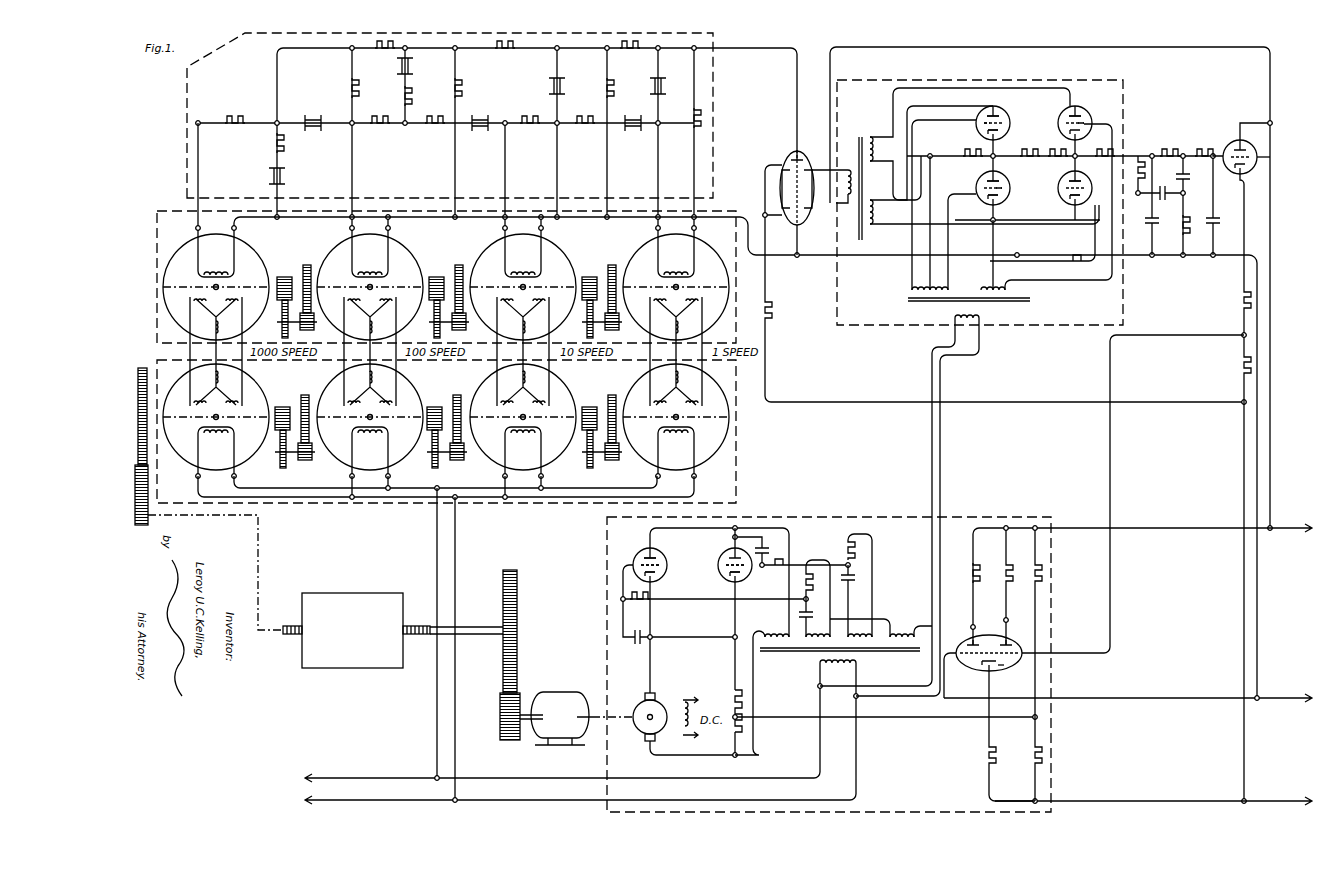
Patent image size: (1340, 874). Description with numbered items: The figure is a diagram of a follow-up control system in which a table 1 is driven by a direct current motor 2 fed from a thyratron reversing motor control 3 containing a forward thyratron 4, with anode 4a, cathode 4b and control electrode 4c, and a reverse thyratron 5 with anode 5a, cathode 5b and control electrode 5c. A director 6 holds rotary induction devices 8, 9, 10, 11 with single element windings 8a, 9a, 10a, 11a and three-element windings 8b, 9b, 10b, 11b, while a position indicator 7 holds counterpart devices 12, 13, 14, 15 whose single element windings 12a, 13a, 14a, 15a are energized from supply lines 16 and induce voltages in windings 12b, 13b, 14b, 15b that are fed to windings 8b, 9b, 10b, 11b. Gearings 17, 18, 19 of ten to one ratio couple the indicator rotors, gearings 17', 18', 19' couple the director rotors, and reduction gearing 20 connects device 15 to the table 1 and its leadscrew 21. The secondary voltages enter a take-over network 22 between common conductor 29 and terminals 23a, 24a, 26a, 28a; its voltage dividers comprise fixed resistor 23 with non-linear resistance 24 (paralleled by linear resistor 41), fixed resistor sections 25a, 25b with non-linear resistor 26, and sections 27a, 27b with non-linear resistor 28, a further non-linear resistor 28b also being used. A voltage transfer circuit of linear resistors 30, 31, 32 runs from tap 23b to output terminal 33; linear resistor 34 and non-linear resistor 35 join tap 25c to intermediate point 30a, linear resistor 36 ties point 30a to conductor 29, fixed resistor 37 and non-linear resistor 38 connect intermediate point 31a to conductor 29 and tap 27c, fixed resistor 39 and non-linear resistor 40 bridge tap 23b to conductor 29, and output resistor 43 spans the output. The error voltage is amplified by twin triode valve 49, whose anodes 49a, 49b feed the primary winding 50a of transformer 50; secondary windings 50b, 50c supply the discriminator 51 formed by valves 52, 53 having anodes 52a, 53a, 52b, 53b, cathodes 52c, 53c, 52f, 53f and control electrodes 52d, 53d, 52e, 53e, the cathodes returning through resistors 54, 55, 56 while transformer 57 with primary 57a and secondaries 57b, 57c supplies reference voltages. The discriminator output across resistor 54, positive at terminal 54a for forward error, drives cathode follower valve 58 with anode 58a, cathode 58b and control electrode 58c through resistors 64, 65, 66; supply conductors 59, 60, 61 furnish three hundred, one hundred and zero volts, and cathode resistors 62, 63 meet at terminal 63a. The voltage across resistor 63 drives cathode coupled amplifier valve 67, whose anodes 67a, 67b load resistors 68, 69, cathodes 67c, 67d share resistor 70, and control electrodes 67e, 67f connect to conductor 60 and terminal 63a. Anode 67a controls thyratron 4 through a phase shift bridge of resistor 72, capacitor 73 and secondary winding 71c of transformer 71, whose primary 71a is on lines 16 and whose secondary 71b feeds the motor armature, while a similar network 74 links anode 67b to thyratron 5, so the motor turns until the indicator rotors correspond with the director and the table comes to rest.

The table 1 is at (360, 593).
The direct current shunt-type motor 2 is at (568, 697).
The thyratron reversing motor control 3 is at (845, 517).
The thyratron 4 is at (722, 560).
The anode of thyratron 4 4a is at (740, 577).
The cathode of thyratron 4 4b is at (734, 545).
The grid of tube 4 4c is at (720, 572).
The thyratron 5 is at (636, 560).
The anode of thyratron 5 5a is at (656, 557).
The cathode of thyratron 5 5b is at (657, 578).
The grid of tube 5 5c is at (668, 566).
The director 6 is at (160, 211).
The position indicator 7 is at (160, 360).
The rotary induction device 8 is at (704, 252).
The single element winding 8a is at (675, 262).
The distributed 3-element winding 8b is at (677, 316).
The rotary induction device 9 is at (552, 252).
The single element winding 9a is at (522, 262).
The distributed 3-element winding 9b is at (524, 316).
The rotary induction device 10 is at (398, 252).
The single element winding 10a is at (369, 262).
The distributed 3-element winding 10b is at (374, 316).
The rotary induction device 11 is at (248, 252).
The single element winding 11a is at (215, 262).
The distributed 3-element winding 11b is at (220, 316).
The rotary induction device 12 is at (640, 385).
The single element winding 12a is at (675, 445).
The distributed 3-element winding 12b is at (680, 388).
The rotary induction device 13 is at (486, 385).
The single element winding 13a is at (522, 445).
The distributed 3-element winding 13b is at (527, 388).
The rotary induction device 14 is at (333, 385).
The single element winding 14a is at (369, 445).
The distributed 3-element winding 14b is at (374, 388).
The rotary induction device 15 is at (183, 385).
The single element winding 15a is at (215, 445).
The distributed 3-element winding 15b is at (220, 388).
The supply lines 16 is at (368, 781).
The gearing 17 is at (602, 424).
The gearing 17' is at (602, 292).
The gearing 18 is at (447, 424).
The gearing 18' is at (449, 292).
The gearing 19 is at (295, 424).
The gearing 19' is at (297, 295).
The reduction gearing 20 is at (148, 480).
The leadscrew 21 is at (483, 627).
The mixing network 22 is at (187, 90).
The fixed resistor 23 is at (235, 130).
The terminal 23a is at (196, 125).
The tap 23b is at (275, 121).
The non-linear resistance 24 is at (312, 116).
The terminal 24a is at (350, 126).
The fixed resistor section 25a is at (380, 112).
The fixed resistor section 25b is at (435, 134).
The tap 25c is at (405, 126).
The non-linear resistor 26 is at (480, 132).
The terminal 26a is at (504, 121).
The fixed resistor section 27a is at (530, 112).
The fixed resistor section 27b is at (583, 134).
The tap 27c is at (555, 126).
The non-linear resistor 28 is at (637, 132).
The terminal 28a is at (660, 126).
The non-linear resistor 28b is at (666, 80).
The common conductor 29 is at (478, 219).
The linear resistor 30 is at (382, 54).
The intermediate point 30a is at (406, 48).
The linear resistor 31 is at (503, 54).
The intermediate point 31a is at (556, 50).
The linear resistor 32 is at (630, 54).
The output terminal 33 is at (696, 48).
The linear resistor 34 is at (412, 97).
The non-linear resistor 35 is at (413, 67).
The linear resistor 36 is at (462, 81).
The fixed linear resistor 37 is at (614, 94).
The non-linear resistor 38 is at (565, 87).
The fixed resistor 39 is at (277, 155).
The non-linear resistor 40 is at (270, 180).
The linear resistor 41 is at (352, 80).
The output resistor 43 is at (702, 122).
The twin triode cathode coupled amplifier valve 49 is at (785, 152).
The anode of valve 49 49a is at (806, 150).
The anode of valve 49 49b is at (805, 228).
The transformer 50 is at (857, 150).
The primary winding 50a is at (846, 193).
The secondary winding 50b is at (874, 145).
The secondary winding 50c is at (876, 228).
The electric valve-type discriminator 51 is at (972, 80).
The twin triode high vacuum valve 52 is at (1012, 120).
The anode 52a is at (1080, 112).
The anode 52b is at (998, 113).
The cathode 52c is at (1005, 128).
The control electrode 52d is at (978, 122).
The control electrode 52e is at (1090, 122).
The cathode 52f is at (1062, 125).
The twin triode high vacuum valve 53 is at (1010, 205).
The anode 53a is at (1078, 205).
The anode 53b is at (980, 198).
The cathode 53c is at (978, 182).
The control electrode 53d is at (1010, 188).
The control electrode 53e is at (1068, 196).
The cathode 53f is at (1082, 186).
The output resistor 54 is at (1028, 160).
The terminal 54a is at (1058, 152).
The resistor 55 is at (962, 152).
The resistor 56 is at (1100, 153).
The transformer 57 is at (1005, 305).
The primary winding 57a is at (900, 505).
The secondary winding 57b is at (910, 290).
The secondary winding 57c is at (1008, 290).
The cathode follower valve 58 is at (1250, 146).
The anode 58a is at (1238, 143).
The cathode 58b is at (1238, 176).
The control electrode 58c is at (1265, 160).
The supply conductor 59 is at (1290, 528).
The supply conductor 60 is at (1290, 698).
The supply conductor 61 is at (1288, 801).
The cathode resistor 62 is at (1244, 300).
The cathode resistor 63 is at (1244, 368).
The common terminal 63a is at (1248, 336).
The resistor 64 is at (1200, 150).
The resistor 65 is at (1168, 150).
The resistor 66 is at (1138, 160).
The twin triode electric valve 67 is at (965, 668).
The anode 67a is at (979, 640).
The anode 67b is at (1008, 640).
The cathode 67c is at (989, 672).
The cathode 67d is at (1003, 668).
The control electrode 67e is at (955, 652).
The control electrode 67f is at (1025, 653).
The resistor 68 is at (971, 575).
The resistor 69 is at (1004, 575).
The common resistor 70 is at (989, 755).
The supply transformer 71 is at (790, 652).
The primary winding 71a is at (838, 679).
The secondary winding 71b is at (776, 632).
The secondary winding 71c is at (898, 645).
The resistor 72 is at (846, 550).
The capacitor 73 is at (852, 582).
The static phase shift network 74 is at (814, 598).